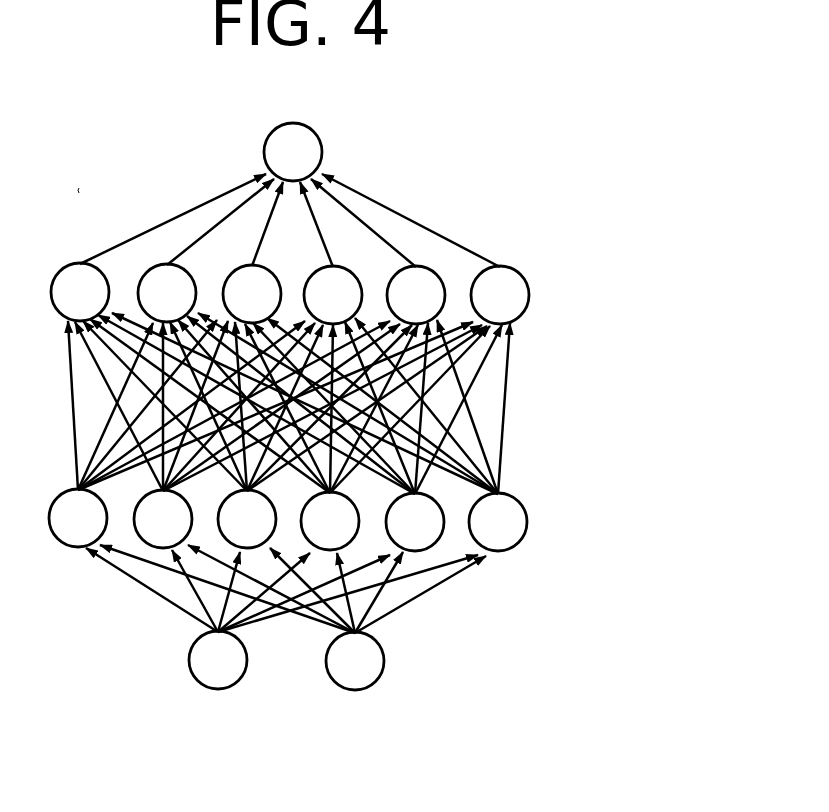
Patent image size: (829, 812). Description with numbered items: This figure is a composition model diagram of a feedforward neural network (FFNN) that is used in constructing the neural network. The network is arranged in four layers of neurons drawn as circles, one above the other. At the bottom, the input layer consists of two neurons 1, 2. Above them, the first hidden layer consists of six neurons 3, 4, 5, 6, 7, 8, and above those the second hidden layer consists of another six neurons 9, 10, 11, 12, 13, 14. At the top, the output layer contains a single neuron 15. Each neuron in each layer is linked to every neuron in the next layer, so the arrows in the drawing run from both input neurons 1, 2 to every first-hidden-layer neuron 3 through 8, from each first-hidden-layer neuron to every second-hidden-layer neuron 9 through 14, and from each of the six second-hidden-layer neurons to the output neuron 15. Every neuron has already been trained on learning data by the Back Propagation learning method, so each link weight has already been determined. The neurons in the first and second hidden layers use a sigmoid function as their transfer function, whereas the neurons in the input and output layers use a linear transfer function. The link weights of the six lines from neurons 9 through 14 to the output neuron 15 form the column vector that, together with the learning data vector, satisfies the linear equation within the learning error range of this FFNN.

The neuron 1 is at (282, 618).
The neuron 2 is at (293, 617).
The neuron 3 is at (261, 433).
The neuron 4 is at (278, 434).
The neuron 5 is at (285, 434).
The neuron 6 is at (290, 434).
The neuron 7 is at (300, 433).
The neuron 8 is at (319, 432).
The neuron 9 is at (158, 247).
The neuron 10 is at (206, 250).
The neuron 11 is at (253, 252).
The neuron 12 is at (331, 253).
The neuron 13 is at (378, 251).
The neuron 14 is at (425, 249).
The neuron 15 is at (293, 152).